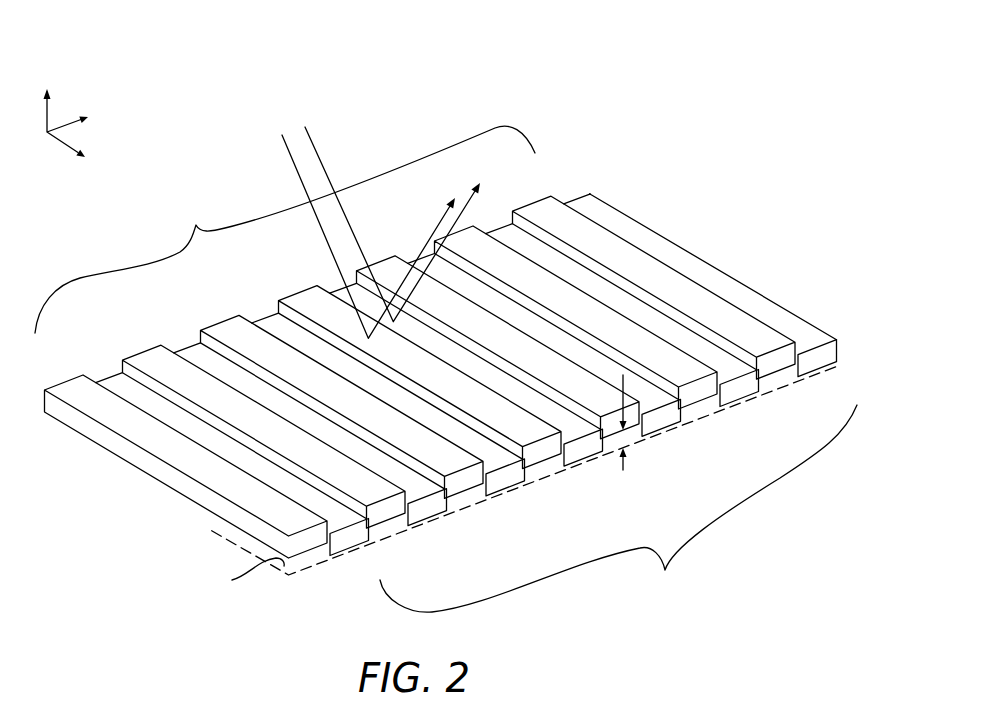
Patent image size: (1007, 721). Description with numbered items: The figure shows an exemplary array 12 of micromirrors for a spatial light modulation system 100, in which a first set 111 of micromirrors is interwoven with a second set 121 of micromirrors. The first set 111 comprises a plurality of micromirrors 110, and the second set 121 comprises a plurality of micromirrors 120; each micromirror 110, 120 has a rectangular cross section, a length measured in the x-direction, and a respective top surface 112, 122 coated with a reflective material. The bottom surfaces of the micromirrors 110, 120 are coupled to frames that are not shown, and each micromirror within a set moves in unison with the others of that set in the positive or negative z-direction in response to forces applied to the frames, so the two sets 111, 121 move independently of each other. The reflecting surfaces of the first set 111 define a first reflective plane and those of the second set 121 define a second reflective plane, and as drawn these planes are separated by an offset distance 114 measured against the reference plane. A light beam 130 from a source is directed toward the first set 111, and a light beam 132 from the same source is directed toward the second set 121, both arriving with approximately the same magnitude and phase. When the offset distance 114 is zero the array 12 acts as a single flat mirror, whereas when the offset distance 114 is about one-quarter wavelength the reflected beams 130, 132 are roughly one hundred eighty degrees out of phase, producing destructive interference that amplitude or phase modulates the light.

The array of micromirrors 12 is at (127, 69).
The optical grating element 100 is at (448, 365).
The micromirrors of the first set 110 is at (72, 382).
The first set of micromirrors 111 is at (194, 222).
The top surface 112 is at (625, 270).
The offset distance 114 is at (625, 376).
The micromirrors of the second set 120 is at (348, 548).
The second set of micromirrors 121 is at (461, 489).
The top surface 122 is at (727, 295).
The light beam 130 is at (298, 177).
The light beam 132 is at (310, 137).